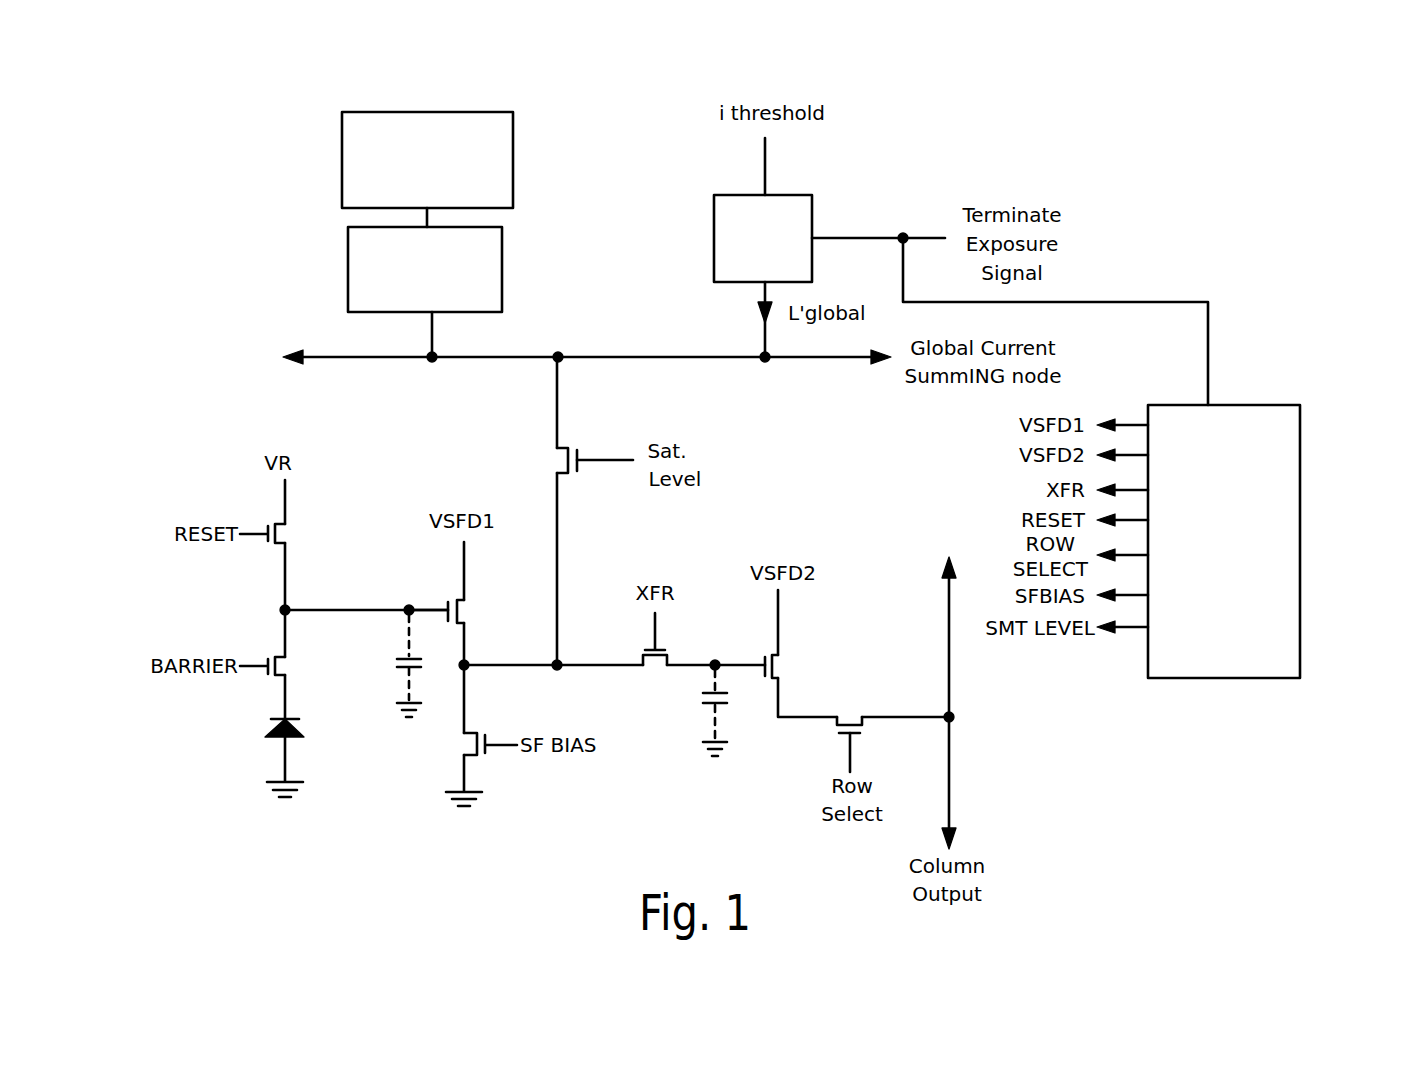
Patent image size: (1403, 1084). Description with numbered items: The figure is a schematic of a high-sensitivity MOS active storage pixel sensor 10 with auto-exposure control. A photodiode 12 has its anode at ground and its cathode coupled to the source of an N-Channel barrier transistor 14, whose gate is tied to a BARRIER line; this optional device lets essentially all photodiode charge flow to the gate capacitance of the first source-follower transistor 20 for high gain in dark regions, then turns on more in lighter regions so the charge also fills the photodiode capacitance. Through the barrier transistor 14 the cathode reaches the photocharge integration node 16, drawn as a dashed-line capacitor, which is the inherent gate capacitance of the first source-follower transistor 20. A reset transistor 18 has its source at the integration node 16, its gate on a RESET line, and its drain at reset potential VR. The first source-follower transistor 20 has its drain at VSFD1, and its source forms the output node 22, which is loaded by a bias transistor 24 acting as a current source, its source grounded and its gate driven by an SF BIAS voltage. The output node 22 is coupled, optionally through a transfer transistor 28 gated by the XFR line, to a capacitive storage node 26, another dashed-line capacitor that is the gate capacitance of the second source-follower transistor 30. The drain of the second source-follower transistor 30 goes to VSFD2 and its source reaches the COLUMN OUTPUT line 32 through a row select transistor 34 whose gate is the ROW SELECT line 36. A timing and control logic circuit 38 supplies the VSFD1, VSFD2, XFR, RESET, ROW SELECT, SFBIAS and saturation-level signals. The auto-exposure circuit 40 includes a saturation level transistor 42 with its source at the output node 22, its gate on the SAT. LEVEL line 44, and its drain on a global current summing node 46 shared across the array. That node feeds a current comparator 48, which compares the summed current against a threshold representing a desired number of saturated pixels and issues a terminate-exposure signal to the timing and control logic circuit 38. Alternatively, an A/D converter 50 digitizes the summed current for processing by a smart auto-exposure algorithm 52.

The pixel sensor 10 is at (820, 480).
The photodiode 12 is at (258, 733).
The barrier transistor 14 is at (290, 664).
The photocharge integration node 16 is at (409, 604).
The reset transistor 18 is at (290, 535).
The first source-follower transistor 20 is at (468, 608).
The output node 22 is at (523, 668).
The bias transistor 24 is at (462, 748).
The capacitive storage node 26 is at (693, 703).
The transfer transistor 28 is at (657, 668).
The second source-follower transistor 30 is at (785, 665).
The COLUMN OUTPUT line 32 is at (952, 680).
The row select transistor 34 is at (850, 713).
The ROW SELECT line 36 is at (850, 755).
The timing and control logic circuit 38 is at (1300, 585).
The auto-exposure circuit 40 is at (966, 168).
The saturation level transistor 42 is at (558, 465).
The SAT. LEVEL line 44 is at (603, 460).
The global current summing node 46 is at (680, 360).
The current comparator 48 is at (812, 215).
The A/D converter 50 is at (502, 262).
The smart auto-exposure algorithm 52 is at (513, 182).